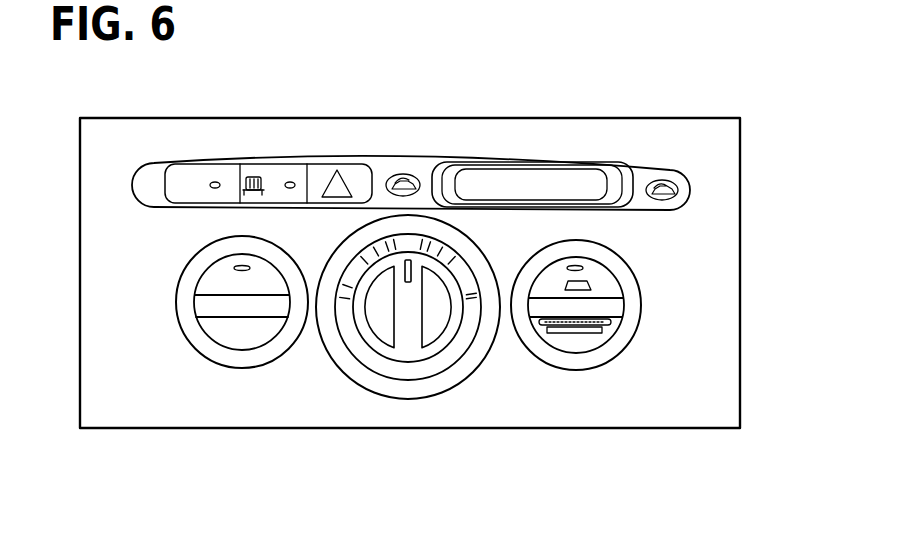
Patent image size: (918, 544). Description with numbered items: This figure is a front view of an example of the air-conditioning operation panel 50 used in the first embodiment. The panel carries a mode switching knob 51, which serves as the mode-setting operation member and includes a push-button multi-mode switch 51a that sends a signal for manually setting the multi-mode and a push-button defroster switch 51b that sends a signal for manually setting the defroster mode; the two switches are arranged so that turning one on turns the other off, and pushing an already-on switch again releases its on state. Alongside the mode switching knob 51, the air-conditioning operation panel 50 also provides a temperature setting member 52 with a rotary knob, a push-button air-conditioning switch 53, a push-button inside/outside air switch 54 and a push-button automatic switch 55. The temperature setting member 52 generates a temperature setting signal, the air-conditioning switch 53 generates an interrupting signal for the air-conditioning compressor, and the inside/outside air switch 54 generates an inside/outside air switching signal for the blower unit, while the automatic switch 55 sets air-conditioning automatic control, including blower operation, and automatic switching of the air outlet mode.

The air-conditioning operation panel 50 is at (351, 118).
The mode switching knob 51 is at (665, 315).
The multi-mode switch 51a is at (603, 332).
The defroster switch 51b is at (603, 282).
The temperature setting member 52 is at (405, 330).
The air-conditioning switch 53 is at (210, 180).
The inside/outside air switch 54 is at (540, 180).
The automatic switch 55 is at (212, 288).